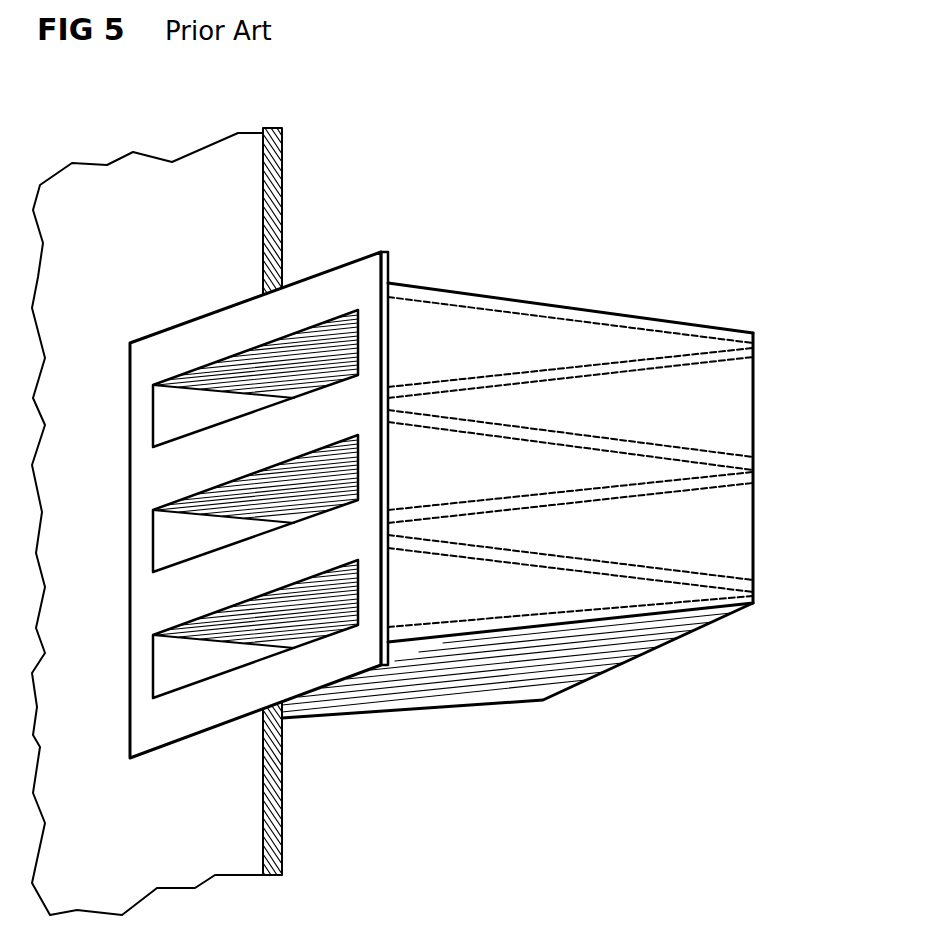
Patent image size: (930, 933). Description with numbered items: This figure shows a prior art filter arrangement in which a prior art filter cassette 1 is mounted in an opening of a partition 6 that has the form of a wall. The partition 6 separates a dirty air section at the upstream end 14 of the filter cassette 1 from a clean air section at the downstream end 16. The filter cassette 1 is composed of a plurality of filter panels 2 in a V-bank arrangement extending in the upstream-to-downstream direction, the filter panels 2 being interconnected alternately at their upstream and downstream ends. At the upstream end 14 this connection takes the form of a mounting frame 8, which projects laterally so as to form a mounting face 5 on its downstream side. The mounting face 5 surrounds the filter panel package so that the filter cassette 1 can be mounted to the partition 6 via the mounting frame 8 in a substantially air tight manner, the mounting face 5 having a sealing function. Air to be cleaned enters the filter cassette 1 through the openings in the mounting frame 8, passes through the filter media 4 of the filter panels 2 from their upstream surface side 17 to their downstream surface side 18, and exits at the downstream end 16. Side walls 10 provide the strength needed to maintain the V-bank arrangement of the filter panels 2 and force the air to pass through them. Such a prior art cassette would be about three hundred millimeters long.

The filter cassette 1 is at (552, 228).
The filter panels 2 is at (753, 460).
The filter media 4 is at (238, 377).
The mounting face 5 is at (390, 263).
The partition 6 is at (128, 168).
The mounting frame 8 is at (335, 280).
The side walls 10 is at (642, 327).
The upstream end 14 is at (112, 687).
The downstream end 16 is at (776, 477).
The upstream surface side 17 is at (513, 497).
The downstream surface side 18 is at (640, 497).